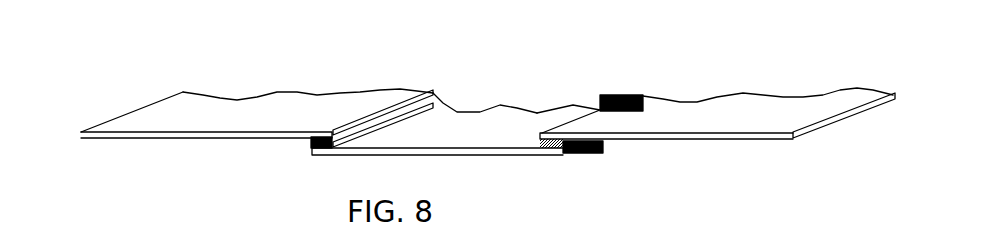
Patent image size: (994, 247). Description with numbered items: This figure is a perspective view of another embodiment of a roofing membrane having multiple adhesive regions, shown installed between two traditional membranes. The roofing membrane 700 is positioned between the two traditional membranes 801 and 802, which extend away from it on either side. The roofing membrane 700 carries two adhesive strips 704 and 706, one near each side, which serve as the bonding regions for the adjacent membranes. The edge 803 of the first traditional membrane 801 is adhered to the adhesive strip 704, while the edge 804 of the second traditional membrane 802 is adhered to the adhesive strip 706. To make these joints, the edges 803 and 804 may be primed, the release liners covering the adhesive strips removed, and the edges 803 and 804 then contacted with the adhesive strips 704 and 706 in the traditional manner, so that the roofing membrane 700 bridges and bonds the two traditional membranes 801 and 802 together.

The roofing membrane 700 is at (447, 148).
The adhesive strip 704 is at (311, 143).
The adhesive strip 706 is at (583, 153).
The traditional membrane 801 is at (197, 133).
The traditional membrane 802 is at (653, 132).
The edge of traditional membrane 803 is at (343, 128).
The edge of traditional membrane 804 is at (542, 133).